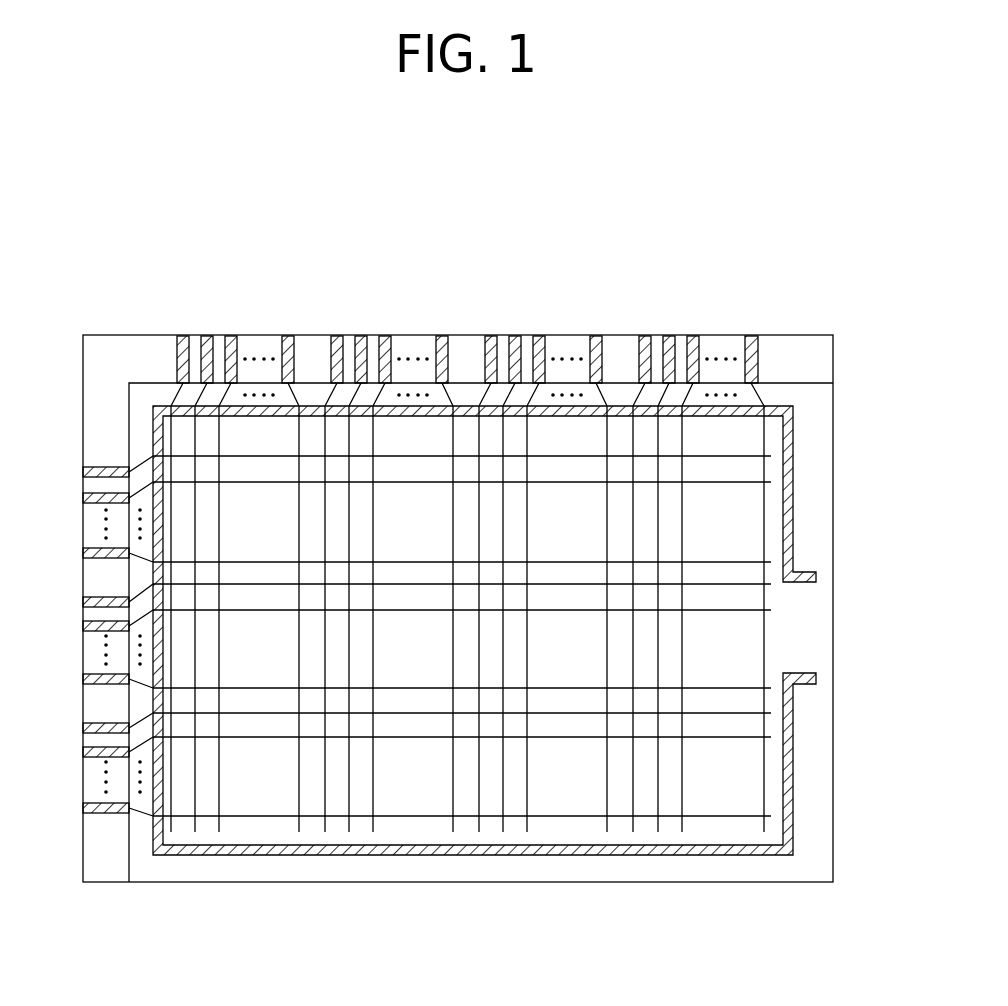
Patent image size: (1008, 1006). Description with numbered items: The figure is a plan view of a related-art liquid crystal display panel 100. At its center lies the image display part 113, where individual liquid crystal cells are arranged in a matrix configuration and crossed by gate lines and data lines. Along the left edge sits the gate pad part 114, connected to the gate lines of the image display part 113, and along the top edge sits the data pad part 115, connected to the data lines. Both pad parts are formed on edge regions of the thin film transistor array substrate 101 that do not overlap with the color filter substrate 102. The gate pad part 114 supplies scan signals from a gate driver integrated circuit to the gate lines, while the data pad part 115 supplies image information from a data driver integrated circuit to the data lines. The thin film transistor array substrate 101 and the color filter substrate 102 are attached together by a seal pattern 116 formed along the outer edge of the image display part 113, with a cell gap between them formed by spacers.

The liquid crystal display panel 100 is at (112, 321).
The thin film transistor array substrate 101 is at (822, 357).
The color filter substrate 102 is at (822, 423).
The image display part 113 is at (433, 536).
The gate pad part 114 is at (72, 817).
The data pad part 115 is at (762, 311).
The seal pattern 116 is at (788, 493).